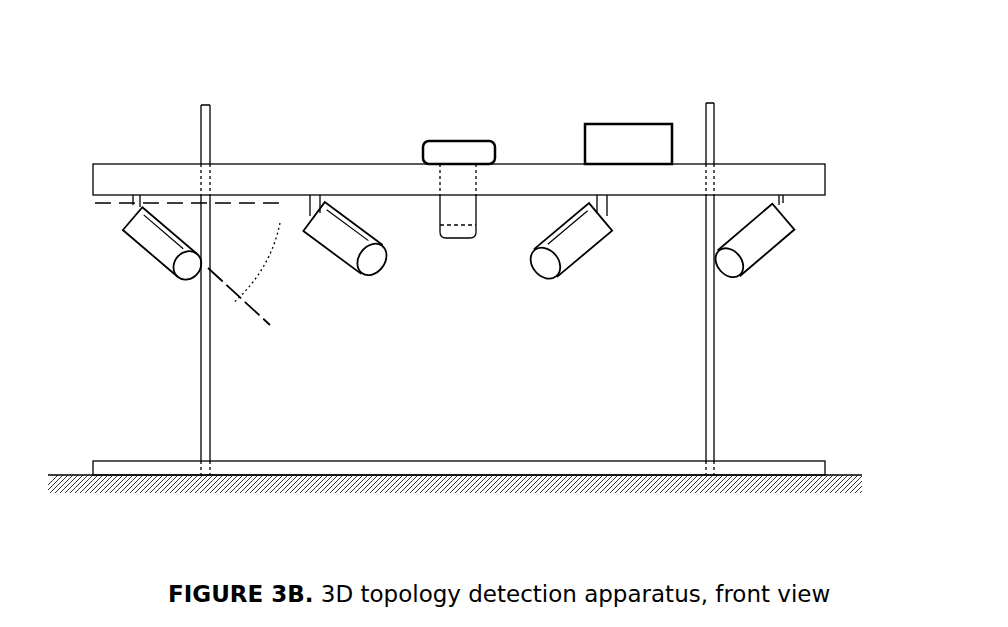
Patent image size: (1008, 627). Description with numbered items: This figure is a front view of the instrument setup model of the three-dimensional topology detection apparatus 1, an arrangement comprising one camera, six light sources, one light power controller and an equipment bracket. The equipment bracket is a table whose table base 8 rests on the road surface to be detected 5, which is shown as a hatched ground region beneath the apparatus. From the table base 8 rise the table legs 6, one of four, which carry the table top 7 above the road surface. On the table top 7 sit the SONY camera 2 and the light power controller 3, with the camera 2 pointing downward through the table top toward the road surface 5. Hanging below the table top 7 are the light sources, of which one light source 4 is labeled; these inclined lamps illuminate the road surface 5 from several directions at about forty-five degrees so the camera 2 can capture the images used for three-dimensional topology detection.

The 3D topology detection apparatus 1 is at (122, 103).
The camera 2 is at (460, 152).
The light power controller 3 is at (628, 140).
The light source 4 is at (150, 245).
The road surface to be detected 5 is at (433, 480).
The table leg 6 is at (712, 128).
The table top 7 is at (770, 174).
The table base 8 is at (778, 468).